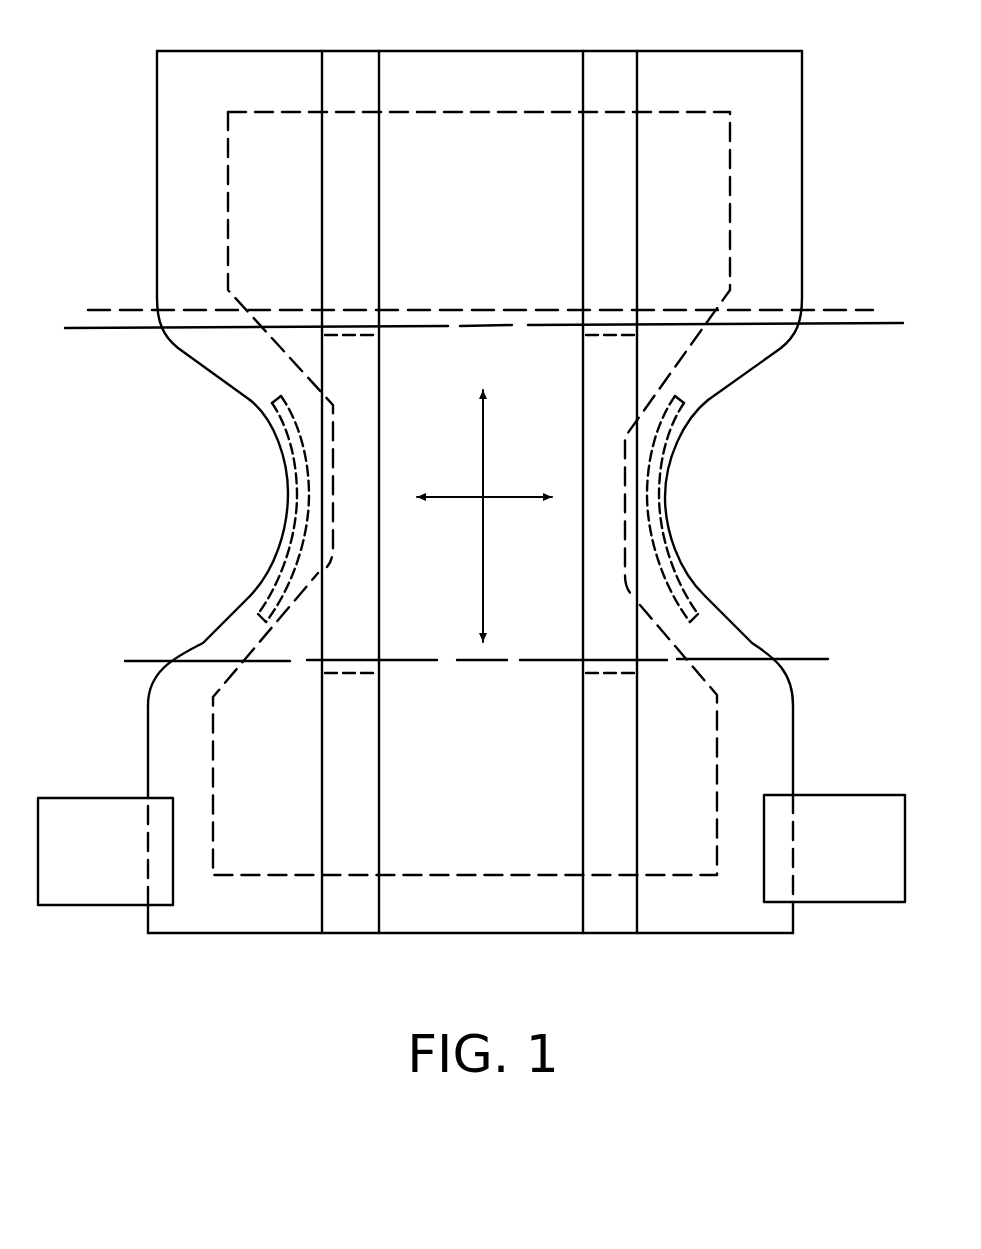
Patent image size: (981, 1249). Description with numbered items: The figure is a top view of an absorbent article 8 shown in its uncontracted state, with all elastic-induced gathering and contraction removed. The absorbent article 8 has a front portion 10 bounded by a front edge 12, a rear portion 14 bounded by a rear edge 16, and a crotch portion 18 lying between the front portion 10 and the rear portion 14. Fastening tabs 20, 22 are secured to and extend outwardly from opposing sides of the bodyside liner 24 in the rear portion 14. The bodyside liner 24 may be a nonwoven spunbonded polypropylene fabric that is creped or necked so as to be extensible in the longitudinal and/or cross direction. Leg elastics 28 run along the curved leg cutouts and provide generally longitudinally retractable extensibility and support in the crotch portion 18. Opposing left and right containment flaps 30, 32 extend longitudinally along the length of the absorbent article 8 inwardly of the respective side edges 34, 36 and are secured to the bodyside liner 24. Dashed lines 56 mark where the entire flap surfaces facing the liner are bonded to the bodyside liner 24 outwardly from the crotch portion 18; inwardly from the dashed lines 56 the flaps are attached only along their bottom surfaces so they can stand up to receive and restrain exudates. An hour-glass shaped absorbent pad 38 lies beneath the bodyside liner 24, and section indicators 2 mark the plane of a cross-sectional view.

The absorbent article 8 is at (770, 983).
The front portion 10 is at (840, 177).
The front edge 12 is at (709, 46).
The rear portion 14 is at (824, 753).
The rear edge 16 is at (670, 939).
The crotch portion 18 is at (717, 517).
The fastening tab 20 is at (835, 903).
The fastening tab 22 is at (85, 906).
The bodyside liner 24 is at (795, 705).
The leg elastics 28 is at (278, 446).
The containment flap 30 is at (583, 233).
The containment flap 32 is at (379, 232).
The side edge 34 is at (747, 634).
The side edge 36 is at (169, 349).
The absorbent pad 38 is at (212, 747).
The dashed lines 56 is at (355, 338).
The section line 2- 2 is at (88, 310).